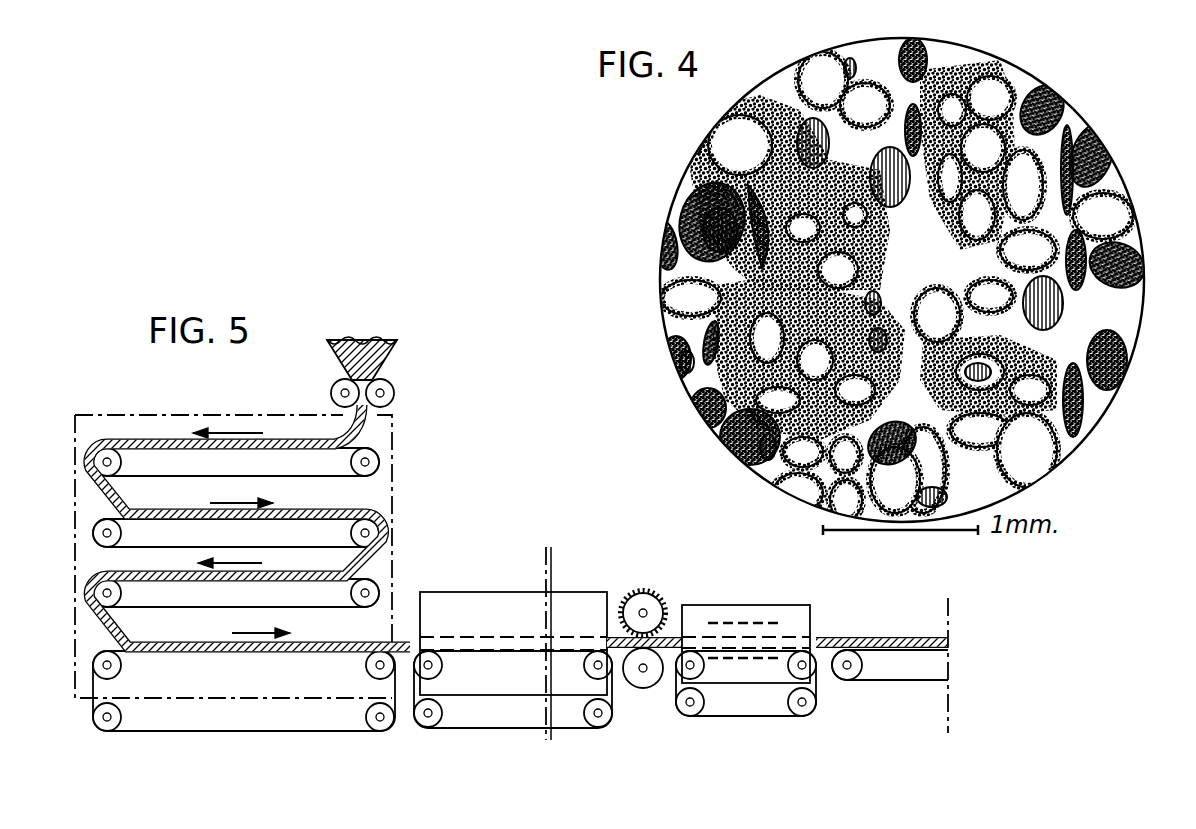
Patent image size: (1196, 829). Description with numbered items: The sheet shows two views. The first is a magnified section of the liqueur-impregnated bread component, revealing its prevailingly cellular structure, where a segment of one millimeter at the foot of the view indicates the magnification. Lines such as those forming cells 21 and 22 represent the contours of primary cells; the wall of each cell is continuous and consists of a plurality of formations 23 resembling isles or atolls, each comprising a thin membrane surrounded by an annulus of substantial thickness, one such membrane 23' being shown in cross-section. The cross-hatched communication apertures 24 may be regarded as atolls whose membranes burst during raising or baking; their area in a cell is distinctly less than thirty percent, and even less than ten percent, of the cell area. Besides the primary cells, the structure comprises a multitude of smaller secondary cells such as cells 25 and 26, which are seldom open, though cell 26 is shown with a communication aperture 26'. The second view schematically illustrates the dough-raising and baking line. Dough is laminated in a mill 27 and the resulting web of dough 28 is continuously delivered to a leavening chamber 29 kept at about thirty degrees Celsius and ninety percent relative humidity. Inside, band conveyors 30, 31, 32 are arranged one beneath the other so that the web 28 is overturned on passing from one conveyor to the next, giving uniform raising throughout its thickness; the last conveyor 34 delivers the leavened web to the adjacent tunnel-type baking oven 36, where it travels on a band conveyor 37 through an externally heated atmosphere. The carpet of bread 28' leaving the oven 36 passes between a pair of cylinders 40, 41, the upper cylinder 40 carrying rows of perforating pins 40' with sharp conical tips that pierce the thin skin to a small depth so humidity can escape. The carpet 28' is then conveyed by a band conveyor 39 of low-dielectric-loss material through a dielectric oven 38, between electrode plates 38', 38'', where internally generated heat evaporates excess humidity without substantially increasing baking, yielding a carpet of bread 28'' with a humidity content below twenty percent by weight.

In FIG. 4, the cell 21 is at (720, 377).
In FIG. 4, the cell 22 is at (1043, 137).
In FIG. 4, the formations 23 is at (876, 187).
In FIG. 4, the membrane 23' is at (701, 123).
In FIG. 4, the communication apertures 24 is at (800, 120).
In FIG. 4, the secondary cell 25 is at (690, 278).
In FIG. 4, the secondary cell 26 is at (677, 416).
In FIG. 4, the communication aperture 26' is at (697, 454).
In FIG. 5, the mill 27 is at (396, 360).
In FIG. 5, the web of dough 28 is at (276, 510).
In FIG. 5, the carpet of bread 28' is at (622, 602).
In FIG. 5, the carpet of bread 28'' is at (882, 624).
In FIG. 5, the leavening chamber 29 is at (378, 492).
In FIG. 5, the band conveyor 30 is at (240, 472).
In FIG. 5, the band conveyor 31 is at (240, 542).
In FIG. 5, the band conveyor 32 is at (240, 605).
In FIG. 5, the last conveyor 34 is at (205, 653).
In FIG. 5, the baking oven 36 is at (470, 600).
In FIG. 5, the band conveyor 37 is at (490, 727).
In FIG. 5, the dielectric oven 38 is at (746, 644).
In FIG. 5, the electrode plate 38' is at (745, 601).
In FIG. 5, the electrode plate 38'' is at (749, 686).
In FIG. 5, the band conveyor 39 is at (822, 685).
In FIG. 5, the upper cylinder 40 is at (632, 589).
In FIG. 5, the perforating pins 40' is at (654, 565).
In FIG. 5, the cylinder 41 is at (643, 688).